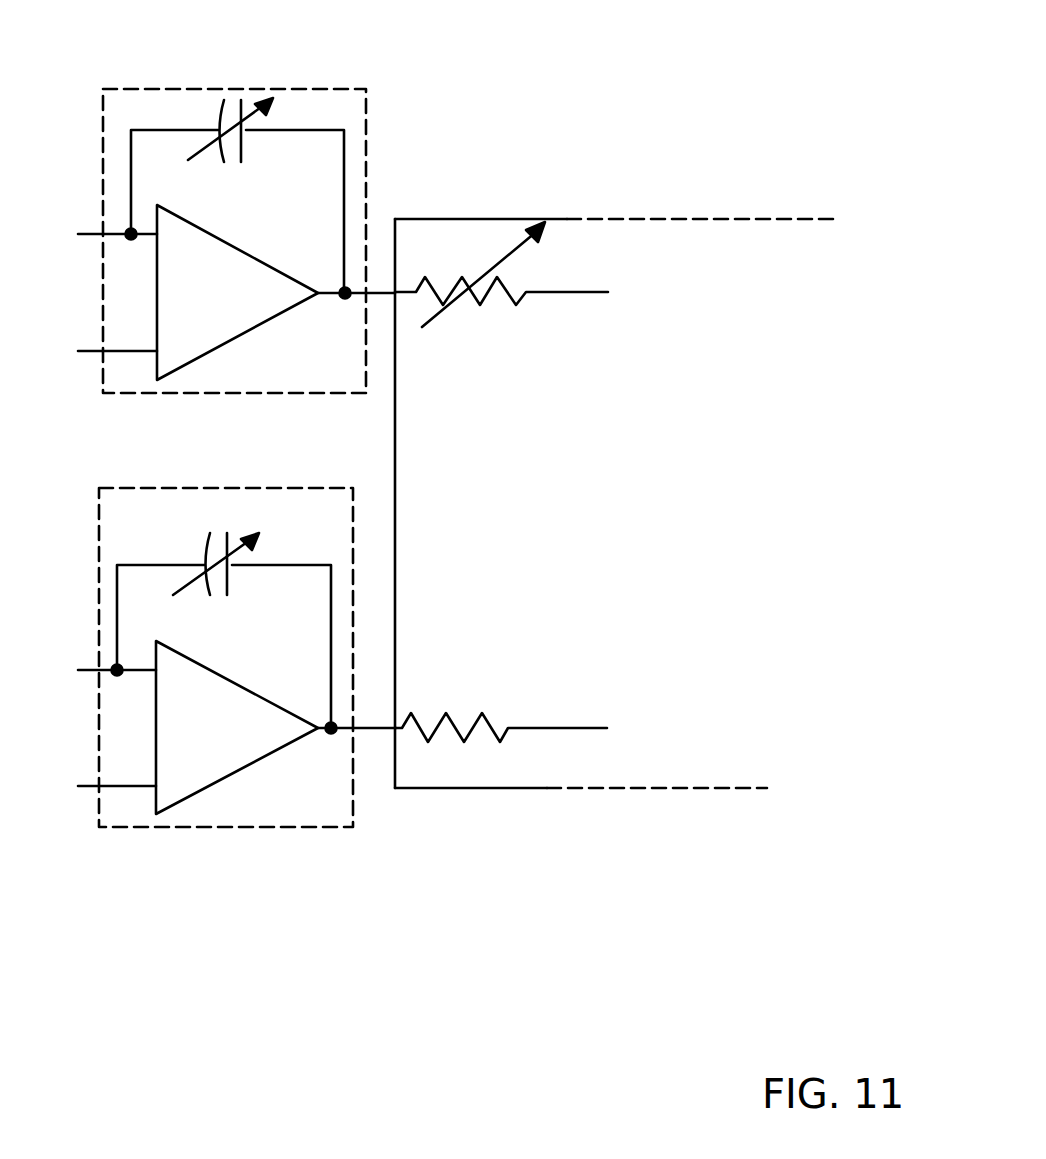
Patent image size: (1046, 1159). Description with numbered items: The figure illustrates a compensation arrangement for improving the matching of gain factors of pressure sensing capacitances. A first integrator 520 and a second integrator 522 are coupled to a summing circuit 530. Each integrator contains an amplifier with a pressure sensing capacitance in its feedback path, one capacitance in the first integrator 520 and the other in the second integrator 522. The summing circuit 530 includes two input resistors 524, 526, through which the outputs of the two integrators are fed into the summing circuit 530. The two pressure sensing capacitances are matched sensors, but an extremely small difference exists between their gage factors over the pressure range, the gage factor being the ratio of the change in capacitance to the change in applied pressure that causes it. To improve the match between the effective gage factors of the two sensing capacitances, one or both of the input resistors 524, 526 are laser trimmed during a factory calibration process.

The first integrator 520 is at (187, 89).
The second integrator 522 is at (167, 827).
The input resistor 524 is at (466, 275).
The input resistor 526 is at (464, 742).
The summing circuit 530 is at (529, 496).